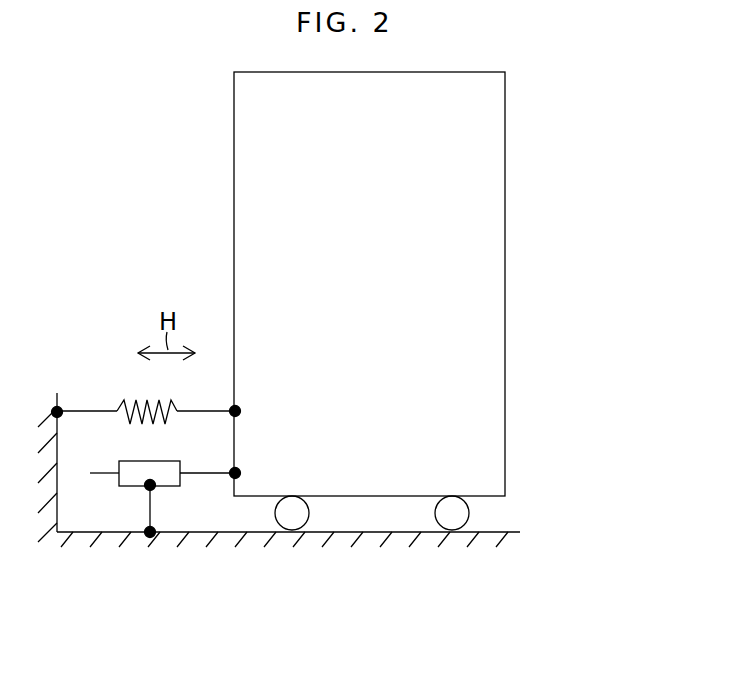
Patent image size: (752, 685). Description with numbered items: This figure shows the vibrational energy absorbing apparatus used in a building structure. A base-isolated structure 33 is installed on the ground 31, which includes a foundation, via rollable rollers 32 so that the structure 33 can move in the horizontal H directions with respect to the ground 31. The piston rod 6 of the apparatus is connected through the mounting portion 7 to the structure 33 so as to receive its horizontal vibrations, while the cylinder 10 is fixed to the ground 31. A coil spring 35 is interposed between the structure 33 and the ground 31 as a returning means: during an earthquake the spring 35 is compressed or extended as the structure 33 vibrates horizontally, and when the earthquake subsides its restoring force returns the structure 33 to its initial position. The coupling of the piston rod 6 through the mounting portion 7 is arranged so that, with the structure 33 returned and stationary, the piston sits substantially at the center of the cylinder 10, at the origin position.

The piston rod 6 is at (203, 477).
The mounting portion 7 is at (232, 470).
The cylinder 10 is at (132, 480).
The ground 31 is at (502, 532).
The rollable rollers 32 is at (293, 518).
The base-isolated structure 33 is at (485, 253).
The coil spring 35 is at (127, 400).